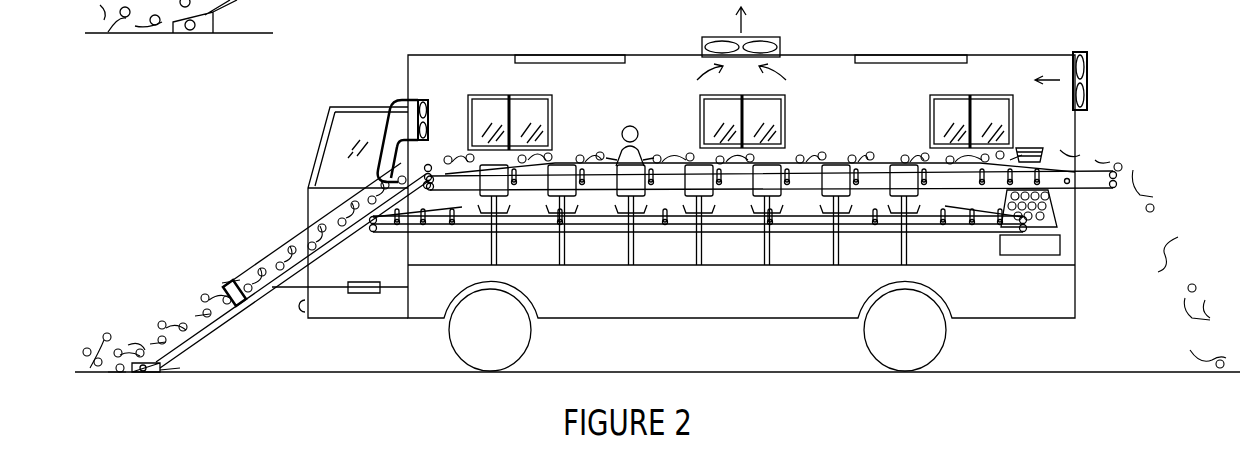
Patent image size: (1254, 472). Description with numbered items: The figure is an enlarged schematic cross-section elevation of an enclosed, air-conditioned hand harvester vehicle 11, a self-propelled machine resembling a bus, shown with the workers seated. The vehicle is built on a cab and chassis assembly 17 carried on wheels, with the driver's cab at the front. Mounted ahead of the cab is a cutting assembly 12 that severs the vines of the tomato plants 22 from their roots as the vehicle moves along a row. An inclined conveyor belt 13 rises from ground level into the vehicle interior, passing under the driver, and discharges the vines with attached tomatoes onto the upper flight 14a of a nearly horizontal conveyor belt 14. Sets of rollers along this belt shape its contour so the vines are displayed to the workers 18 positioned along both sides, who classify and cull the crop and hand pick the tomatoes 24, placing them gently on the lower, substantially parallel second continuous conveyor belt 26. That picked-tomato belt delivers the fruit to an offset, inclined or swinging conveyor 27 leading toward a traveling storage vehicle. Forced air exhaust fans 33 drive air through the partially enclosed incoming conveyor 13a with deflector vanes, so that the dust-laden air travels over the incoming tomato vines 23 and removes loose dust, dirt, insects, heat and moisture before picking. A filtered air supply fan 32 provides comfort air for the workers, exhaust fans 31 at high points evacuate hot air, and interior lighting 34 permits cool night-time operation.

The hand harvester vehicle 11 is at (307, 203).
The cutting assembly 12 is at (137, 380).
The inclined conveyor belt 13 is at (262, 267).
The partially enclosed incoming conveyor 13a is at (290, 240).
The conveyor belt 14 is at (458, 165).
The upper flight of conveyor belt 14a is at (598, 162).
The cab and chassis assembly 17 is at (320, 138).
The workers 18 is at (632, 126).
The tomato plants 22 is at (88, 345).
The incoming tomato vines 23 is at (220, 297).
The tomatoes 24 is at (795, 150).
The second continuous conveyor belt 26 is at (957, 245).
The offset, inclined or swinging conveyor 27 is at (1053, 224).
The exhaust fans 31 is at (758, 37).
The filtered air supply fan 32 is at (1090, 67).
The forced air exhaust fans 33 is at (418, 98).
The lighting 34 is at (608, 55).